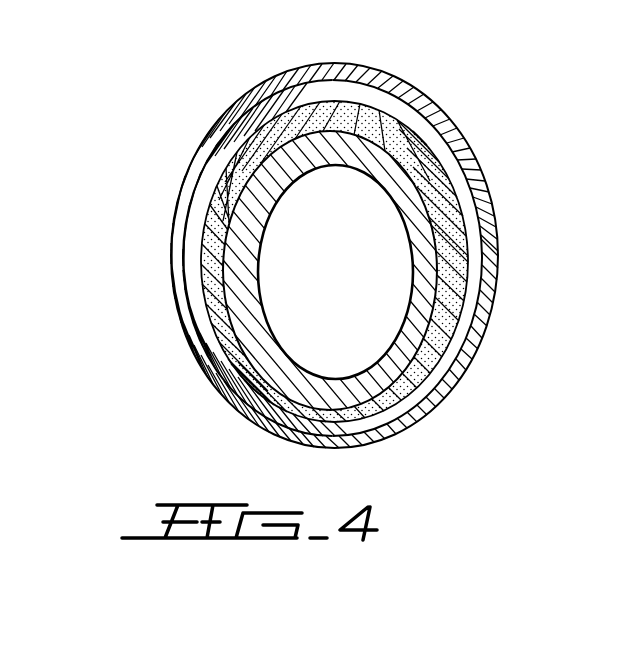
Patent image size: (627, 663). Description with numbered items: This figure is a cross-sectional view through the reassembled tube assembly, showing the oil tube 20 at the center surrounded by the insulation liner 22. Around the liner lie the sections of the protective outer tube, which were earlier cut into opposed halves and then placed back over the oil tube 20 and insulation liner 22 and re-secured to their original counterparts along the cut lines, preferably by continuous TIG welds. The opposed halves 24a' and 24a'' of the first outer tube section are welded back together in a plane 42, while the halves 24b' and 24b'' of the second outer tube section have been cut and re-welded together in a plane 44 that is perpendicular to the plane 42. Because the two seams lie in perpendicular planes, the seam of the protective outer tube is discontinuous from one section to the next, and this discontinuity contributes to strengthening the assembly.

The oil tube 20 is at (393, 190).
The insulation liner 22 is at (440, 130).
The opposed half of first outer tube section 24a' is at (441, 258).
The opposed half of first outer tube section 24a'' is at (248, 338).
The opposed half of second outer tube section 24b' is at (329, 244).
The opposed half of second outer tube section 24b'' is at (373, 293).
The plane 42 is at (332, 100).
The plane 44 is at (184, 250).